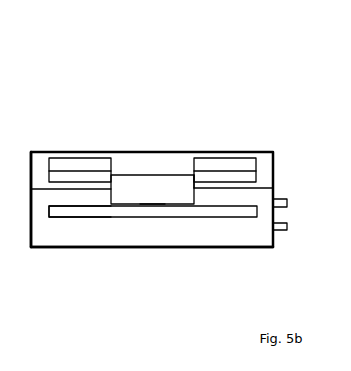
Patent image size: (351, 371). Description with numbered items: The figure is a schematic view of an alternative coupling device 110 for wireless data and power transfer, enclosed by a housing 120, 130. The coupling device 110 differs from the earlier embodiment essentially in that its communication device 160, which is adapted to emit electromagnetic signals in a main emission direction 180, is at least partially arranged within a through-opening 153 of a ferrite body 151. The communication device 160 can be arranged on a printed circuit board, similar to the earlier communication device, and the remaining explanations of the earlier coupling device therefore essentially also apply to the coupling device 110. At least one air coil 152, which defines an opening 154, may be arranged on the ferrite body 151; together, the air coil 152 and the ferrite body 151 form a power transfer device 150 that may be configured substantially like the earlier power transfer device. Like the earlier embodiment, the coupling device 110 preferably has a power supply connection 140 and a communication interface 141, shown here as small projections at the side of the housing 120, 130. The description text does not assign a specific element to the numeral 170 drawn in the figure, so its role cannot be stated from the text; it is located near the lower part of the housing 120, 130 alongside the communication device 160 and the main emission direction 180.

The coupling device 110 is at (188, 31).
The housing 120 is at (214, 247).
The housing 130 is at (42, 152).
The power supply connection 140 is at (283, 199).
The communication interface 141 is at (286, 229).
The power transfer device 150 is at (238, 158).
The ferrite body 151 is at (66, 158).
The air coil 152 is at (100, 160).
The through-opening 153 is at (121, 160).
The opening 154 is at (192, 152).
The communication device 160 is at (178, 190).
The bottom layer 170 is at (63, 208).
The main emission direction 180 is at (152, 170).